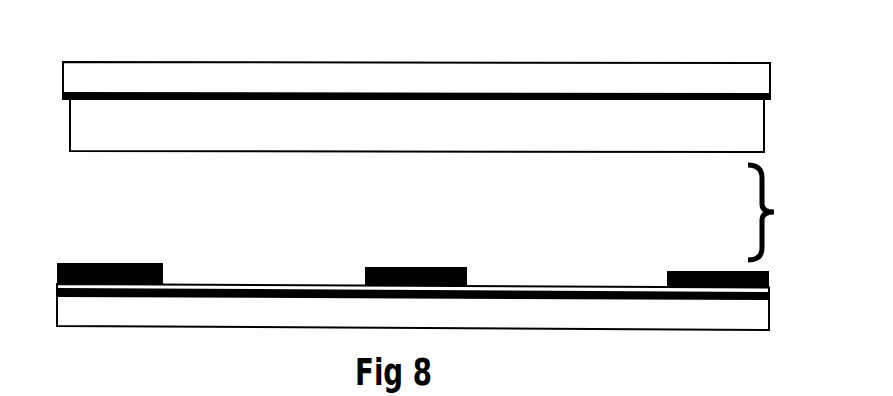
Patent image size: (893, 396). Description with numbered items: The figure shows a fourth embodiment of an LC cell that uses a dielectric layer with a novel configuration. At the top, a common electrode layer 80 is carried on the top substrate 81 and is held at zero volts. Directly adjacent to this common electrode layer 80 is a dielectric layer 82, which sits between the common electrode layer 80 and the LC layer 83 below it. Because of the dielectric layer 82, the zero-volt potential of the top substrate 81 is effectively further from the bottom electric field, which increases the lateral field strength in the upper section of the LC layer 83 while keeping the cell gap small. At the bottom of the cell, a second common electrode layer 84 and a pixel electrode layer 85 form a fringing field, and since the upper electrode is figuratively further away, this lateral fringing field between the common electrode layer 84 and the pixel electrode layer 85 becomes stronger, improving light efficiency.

The common electrode layer 80 is at (64, 99).
The top substrate 81 is at (677, 78).
The dielectric layer 82 is at (437, 132).
The LC layer 83 is at (779, 212).
The common electrode layer 84 is at (268, 297).
The pixel electrode layer 85 is at (125, 265).